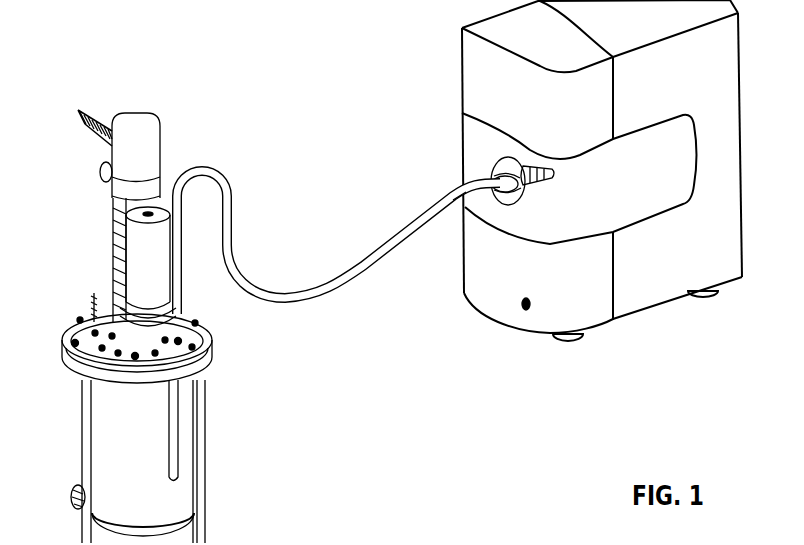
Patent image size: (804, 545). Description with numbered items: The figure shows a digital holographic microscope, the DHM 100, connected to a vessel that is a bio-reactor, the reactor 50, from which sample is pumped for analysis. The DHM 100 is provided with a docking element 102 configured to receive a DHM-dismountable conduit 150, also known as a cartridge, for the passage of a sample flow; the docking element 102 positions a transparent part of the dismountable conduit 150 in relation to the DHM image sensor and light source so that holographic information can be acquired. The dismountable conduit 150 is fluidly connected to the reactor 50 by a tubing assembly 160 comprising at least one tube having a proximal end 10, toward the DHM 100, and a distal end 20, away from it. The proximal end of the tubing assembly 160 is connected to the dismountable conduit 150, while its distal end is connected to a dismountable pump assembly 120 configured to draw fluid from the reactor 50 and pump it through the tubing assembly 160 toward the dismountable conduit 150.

The DHM 100 is at (636, 338).
The docking element 102 is at (505, 205).
The dismountable conduit 150 is at (540, 190).
The tubing assembly 160 is at (323, 308).
The proximal end 10 is at (453, 196).
The distal end 20 is at (176, 157).
The dismountable pump assembly 120 is at (163, 271).
The reactor 50 is at (175, 492).